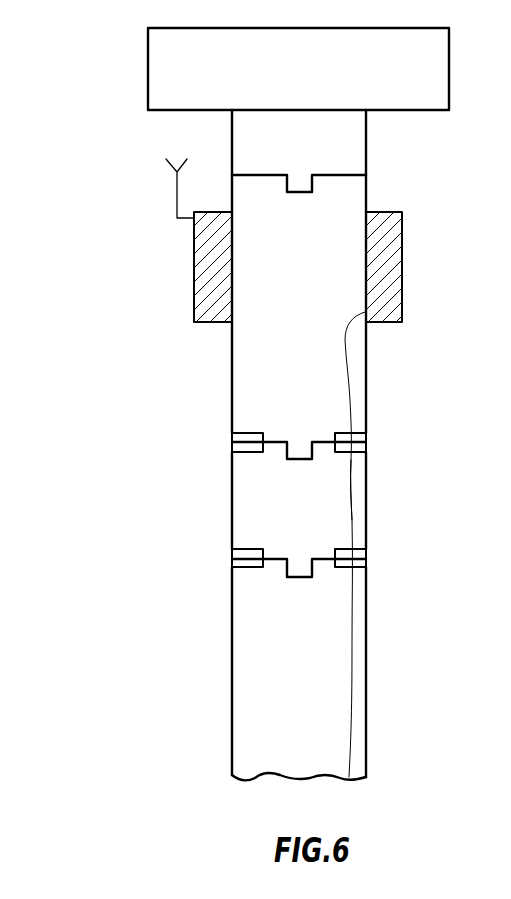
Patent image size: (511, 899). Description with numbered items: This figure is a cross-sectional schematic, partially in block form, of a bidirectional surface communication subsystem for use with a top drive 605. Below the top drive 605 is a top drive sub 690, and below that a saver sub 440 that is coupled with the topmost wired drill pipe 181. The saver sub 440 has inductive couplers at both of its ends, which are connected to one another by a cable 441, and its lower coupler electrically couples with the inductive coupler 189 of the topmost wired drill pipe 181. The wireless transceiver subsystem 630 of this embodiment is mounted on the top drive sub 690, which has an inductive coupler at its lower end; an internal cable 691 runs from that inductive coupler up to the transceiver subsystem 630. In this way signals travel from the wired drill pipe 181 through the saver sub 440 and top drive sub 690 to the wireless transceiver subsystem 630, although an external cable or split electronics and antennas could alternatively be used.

The top drive 605 is at (160, 63).
The wireless transceiver subsystem 630 is at (395, 240).
The top drive sub 690 is at (250, 398).
The internal cable 691 is at (350, 387).
The saver sub 440 is at (250, 518).
The cable 441 is at (352, 493).
The inductive coupler 189 is at (366, 563).
The wired drill pipe 181 is at (252, 667).